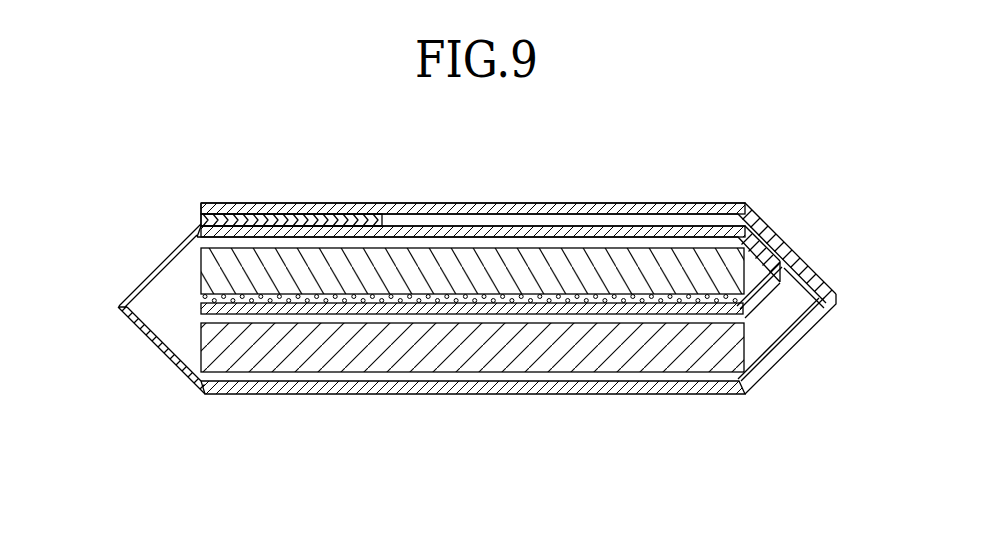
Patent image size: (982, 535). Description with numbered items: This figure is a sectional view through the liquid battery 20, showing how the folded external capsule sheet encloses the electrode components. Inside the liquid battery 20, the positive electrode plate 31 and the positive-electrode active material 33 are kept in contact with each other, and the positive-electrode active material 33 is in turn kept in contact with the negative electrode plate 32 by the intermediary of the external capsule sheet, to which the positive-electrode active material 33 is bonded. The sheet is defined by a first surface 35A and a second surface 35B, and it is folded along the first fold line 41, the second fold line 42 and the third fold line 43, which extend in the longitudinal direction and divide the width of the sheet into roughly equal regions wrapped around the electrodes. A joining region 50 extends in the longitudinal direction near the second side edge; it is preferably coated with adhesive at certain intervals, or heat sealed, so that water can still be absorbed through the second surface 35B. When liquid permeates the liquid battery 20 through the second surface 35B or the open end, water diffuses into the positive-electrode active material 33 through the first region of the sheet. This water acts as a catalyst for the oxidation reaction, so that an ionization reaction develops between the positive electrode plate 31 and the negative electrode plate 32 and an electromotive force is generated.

The liquid battery 20 is at (879, 136).
The positive electrode plate 31 is at (629, 270).
The negative electrode plate 32 is at (472, 348).
The positive-electrode active material 33 is at (583, 298).
The first surface 35A is at (440, 202).
The second surface 35B is at (506, 214).
The first fold line 41 is at (804, 274).
The second fold line 42 is at (117, 305).
The third fold line 43 is at (838, 299).
The joining region 50 is at (291, 214).